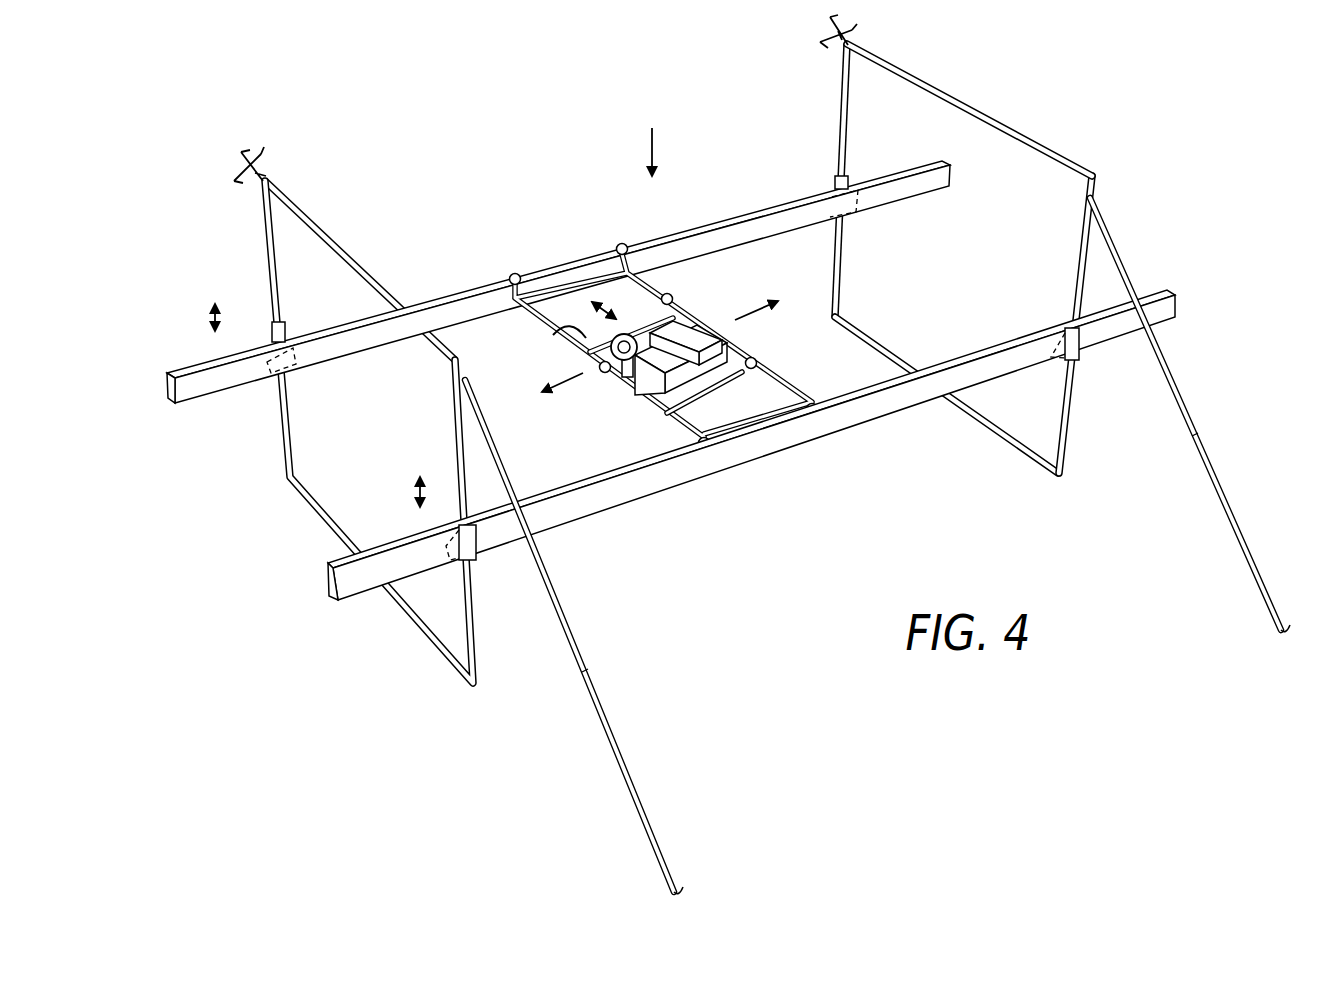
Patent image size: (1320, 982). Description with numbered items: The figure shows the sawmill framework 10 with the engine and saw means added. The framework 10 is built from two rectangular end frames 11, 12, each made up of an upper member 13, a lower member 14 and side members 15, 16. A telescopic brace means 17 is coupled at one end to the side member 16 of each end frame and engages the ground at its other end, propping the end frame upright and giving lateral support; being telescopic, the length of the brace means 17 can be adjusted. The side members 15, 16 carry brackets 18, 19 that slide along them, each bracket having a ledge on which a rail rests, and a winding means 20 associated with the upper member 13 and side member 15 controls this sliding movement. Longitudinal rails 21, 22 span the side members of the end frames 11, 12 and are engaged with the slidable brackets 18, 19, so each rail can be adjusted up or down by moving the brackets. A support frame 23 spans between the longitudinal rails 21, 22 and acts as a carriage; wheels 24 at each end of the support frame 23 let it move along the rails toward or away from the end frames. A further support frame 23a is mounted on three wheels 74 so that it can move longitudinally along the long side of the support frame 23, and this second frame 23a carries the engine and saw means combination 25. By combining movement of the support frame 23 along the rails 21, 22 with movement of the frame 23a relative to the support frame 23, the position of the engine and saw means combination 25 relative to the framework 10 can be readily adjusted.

The rectangular framework 10 is at (728, 454).
The end frame 11 is at (990, 110).
The end frame 12 is at (394, 279).
The upper member 13 is at (982, 258).
The lower member 14 is at (883, 350).
The side member 15 is at (846, 265).
The side member 16 is at (1078, 238).
The telescopic brace means 17 is at (588, 660).
The bracket 18 is at (830, 197).
The bracket 19 is at (1080, 352).
The winding means 20 is at (816, 45).
The longitudinal rail 21 is at (713, 240).
The longitudinal rail 22 is at (897, 400).
The support frame 23 is at (578, 306).
The further support frame 23a is at (562, 337).
The wheels 24 is at (619, 245).
The engine and saw means combination 25 is at (646, 393).
The wheels 74 is at (673, 298).